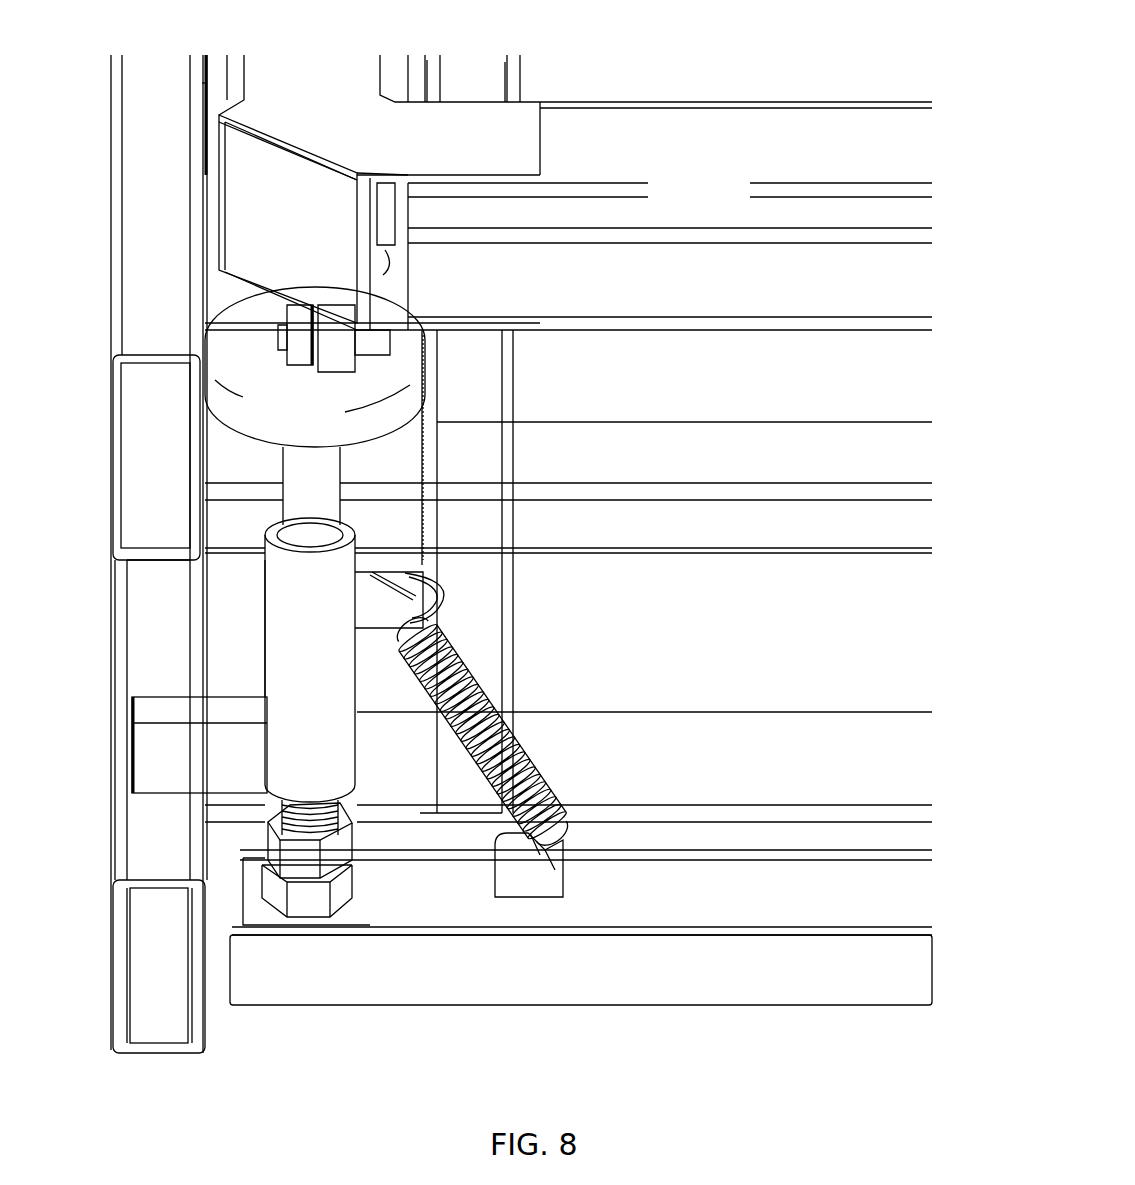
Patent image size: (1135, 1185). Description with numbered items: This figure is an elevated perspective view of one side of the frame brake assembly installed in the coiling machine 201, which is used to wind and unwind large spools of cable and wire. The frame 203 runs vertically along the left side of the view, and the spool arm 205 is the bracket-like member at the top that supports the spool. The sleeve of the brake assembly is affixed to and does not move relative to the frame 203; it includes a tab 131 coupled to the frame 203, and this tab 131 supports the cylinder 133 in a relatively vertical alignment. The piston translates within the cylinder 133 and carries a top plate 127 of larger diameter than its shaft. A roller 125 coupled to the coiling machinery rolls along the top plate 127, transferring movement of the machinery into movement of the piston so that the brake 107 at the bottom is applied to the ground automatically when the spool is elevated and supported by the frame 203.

The coiling machine 201 is at (805, 60).
The frame 203 is at (153, 1052).
The spool arm 205 is at (312, 232).
The roller 125 is at (278, 325).
The top plate 127 is at (315, 416).
The cylinder 133 is at (325, 676).
The tab 131 is at (220, 772).
The brake 107 is at (767, 909).